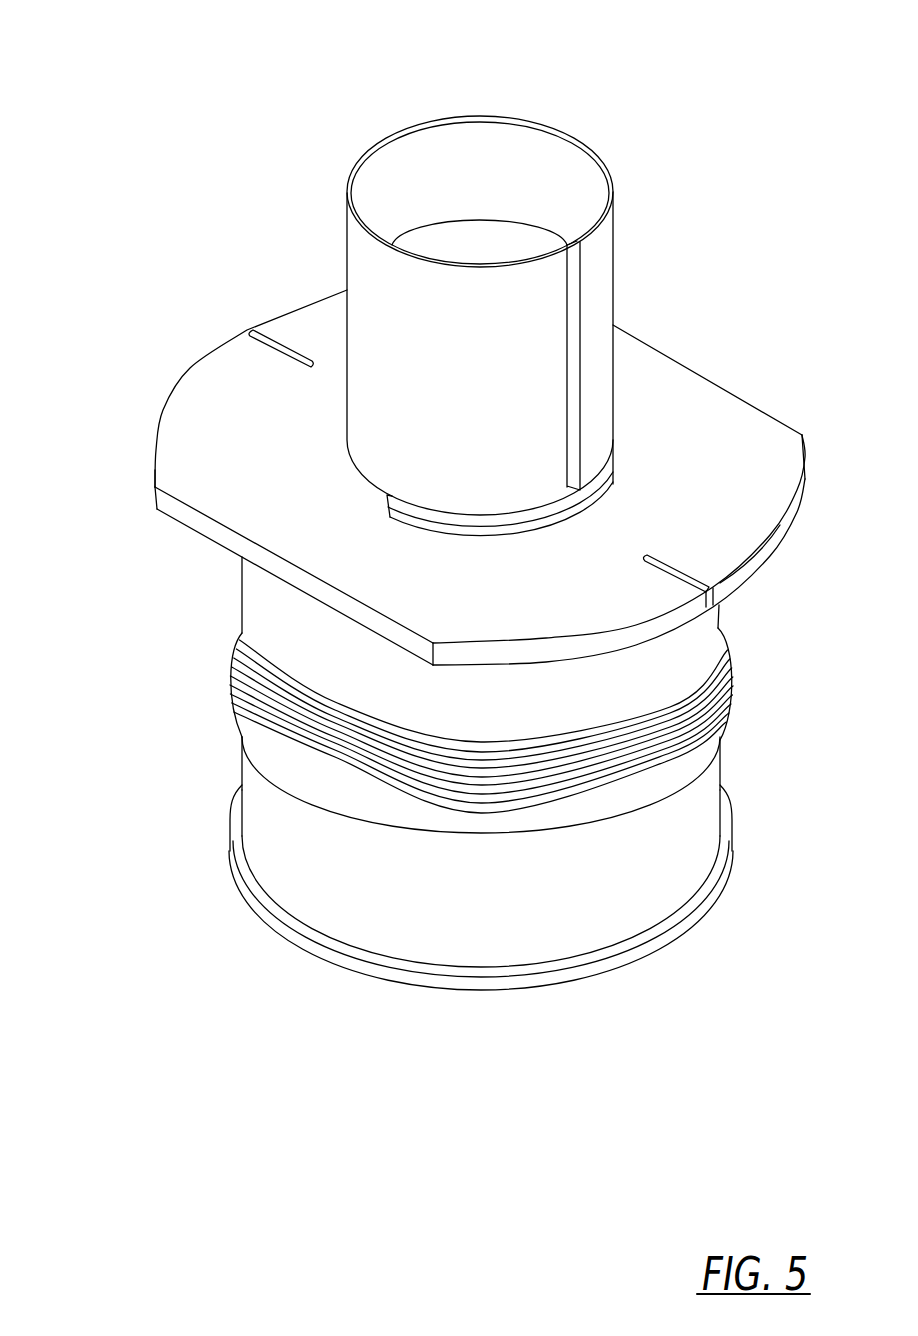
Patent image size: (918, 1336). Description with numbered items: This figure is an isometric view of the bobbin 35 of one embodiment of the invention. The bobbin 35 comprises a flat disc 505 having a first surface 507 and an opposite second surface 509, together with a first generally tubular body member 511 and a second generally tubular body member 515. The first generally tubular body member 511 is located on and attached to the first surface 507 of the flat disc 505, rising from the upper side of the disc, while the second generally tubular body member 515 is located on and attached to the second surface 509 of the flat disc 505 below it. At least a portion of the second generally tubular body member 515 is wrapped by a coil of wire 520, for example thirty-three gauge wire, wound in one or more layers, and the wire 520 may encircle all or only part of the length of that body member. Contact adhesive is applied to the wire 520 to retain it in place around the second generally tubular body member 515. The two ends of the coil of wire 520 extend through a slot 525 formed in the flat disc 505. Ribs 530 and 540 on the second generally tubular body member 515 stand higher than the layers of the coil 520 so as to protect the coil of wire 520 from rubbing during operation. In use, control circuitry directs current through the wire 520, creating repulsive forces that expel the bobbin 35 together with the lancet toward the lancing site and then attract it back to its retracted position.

The bobbin 35 is at (109, 74).
The flat disc 505 is at (116, 466).
The first surface 507 is at (690, 388).
The second surface 509 is at (764, 605).
The first generally tubular body member 511 is at (484, 116).
The second generally tubular body member 515 is at (545, 935).
The coil of wire 520 is at (334, 712).
The slot 525 is at (258, 330).
The rib 530 is at (283, 922).
The rib 540 is at (240, 778).